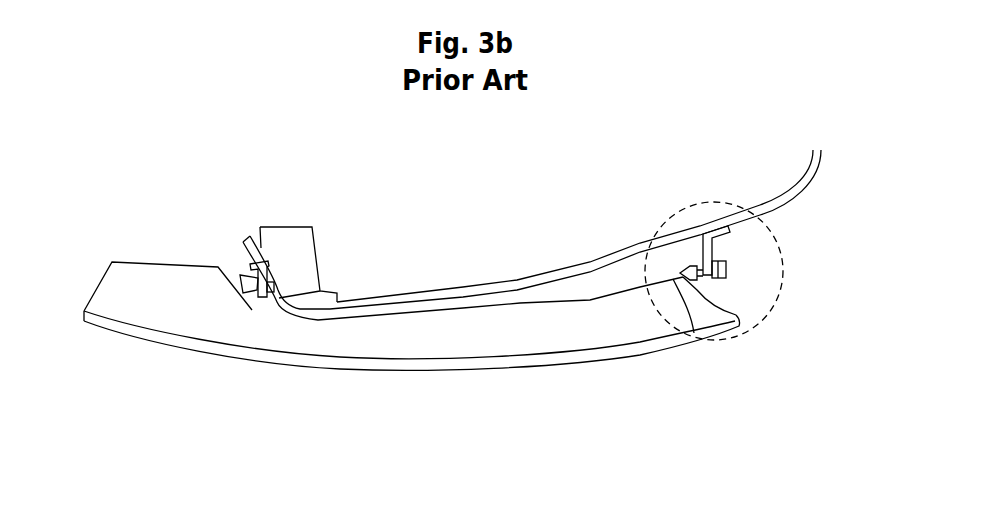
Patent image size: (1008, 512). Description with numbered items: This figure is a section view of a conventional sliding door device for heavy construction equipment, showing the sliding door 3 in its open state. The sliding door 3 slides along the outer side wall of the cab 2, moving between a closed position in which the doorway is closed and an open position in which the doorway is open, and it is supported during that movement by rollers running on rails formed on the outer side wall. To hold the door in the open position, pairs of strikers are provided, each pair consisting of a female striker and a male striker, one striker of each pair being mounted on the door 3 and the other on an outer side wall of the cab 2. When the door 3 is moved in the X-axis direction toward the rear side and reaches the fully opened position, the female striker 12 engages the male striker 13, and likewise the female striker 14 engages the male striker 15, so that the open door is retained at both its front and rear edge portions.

The cab 2 is at (770, 210).
The sliding door 3 is at (562, 362).
The female striker 12 is at (244, 258).
The male striker 13 is at (252, 296).
The female striker 14 is at (695, 290).
The male striker 15 is at (686, 268).